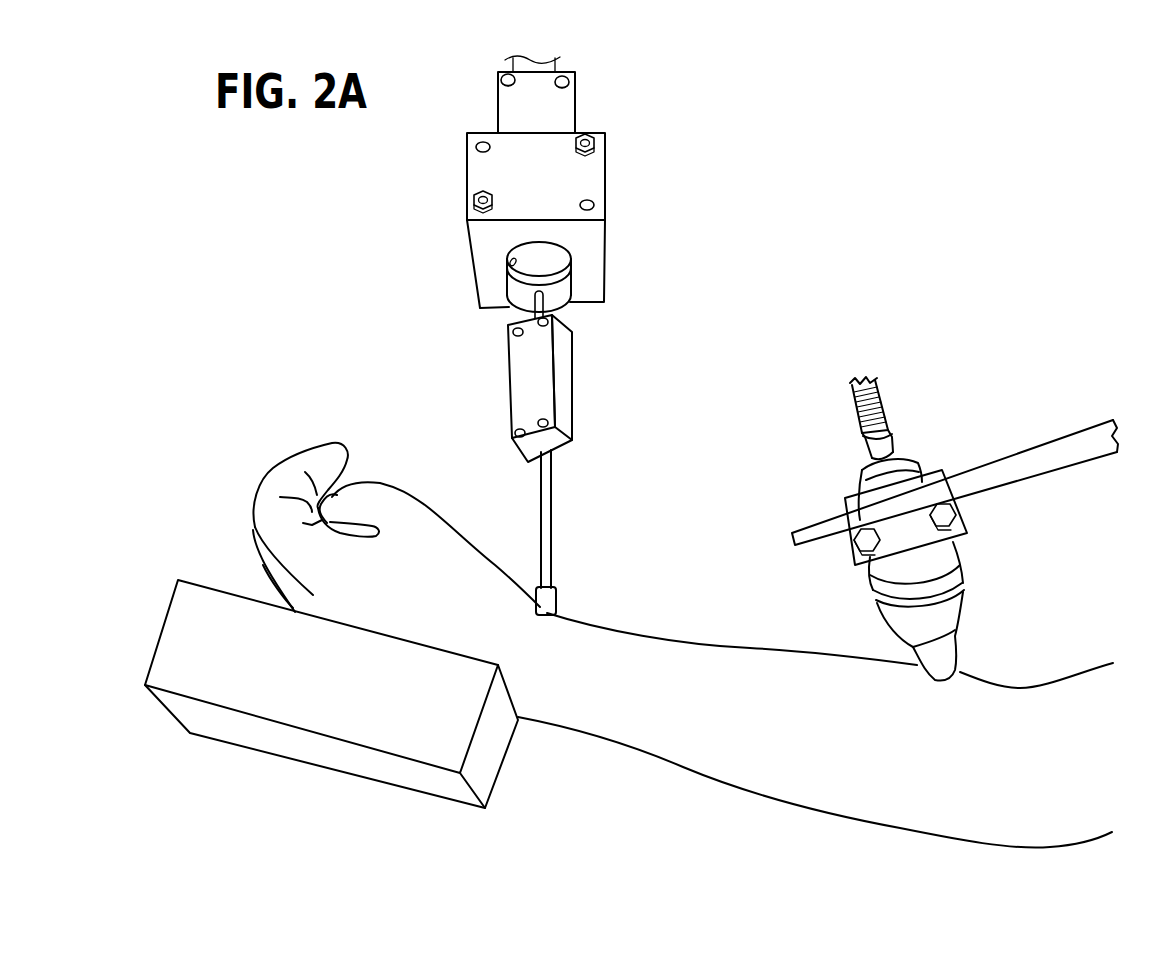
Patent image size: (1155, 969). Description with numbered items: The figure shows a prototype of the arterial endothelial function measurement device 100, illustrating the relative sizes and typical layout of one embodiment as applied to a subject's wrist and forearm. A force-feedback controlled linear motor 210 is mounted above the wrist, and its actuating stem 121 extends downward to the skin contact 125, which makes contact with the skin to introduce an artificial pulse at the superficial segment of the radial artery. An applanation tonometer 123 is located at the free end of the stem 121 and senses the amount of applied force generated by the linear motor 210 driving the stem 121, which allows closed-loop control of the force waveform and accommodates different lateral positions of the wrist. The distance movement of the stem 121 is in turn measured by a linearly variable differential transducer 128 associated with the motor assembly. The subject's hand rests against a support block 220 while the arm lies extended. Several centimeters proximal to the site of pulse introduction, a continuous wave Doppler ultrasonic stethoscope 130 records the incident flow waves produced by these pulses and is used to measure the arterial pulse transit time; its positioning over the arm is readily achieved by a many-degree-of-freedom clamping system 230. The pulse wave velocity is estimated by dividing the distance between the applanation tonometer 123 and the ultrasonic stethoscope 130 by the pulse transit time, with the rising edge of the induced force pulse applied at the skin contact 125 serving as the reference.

The injection system 100 is at (893, 210).
The linearly variable differential transducer (LVDT) 128 is at (552, 108).
The linear motor 210 is at (577, 293).
The applanation tonometer 123 is at (537, 600).
The actuating stem 121 is at (551, 472).
The skin contact 125 is at (556, 612).
The support block 220 is at (208, 583).
The many-degree-of-freedom clamping system 230 is at (1013, 452).
The Doppler ultrasonic stethoscope 130 is at (862, 472).